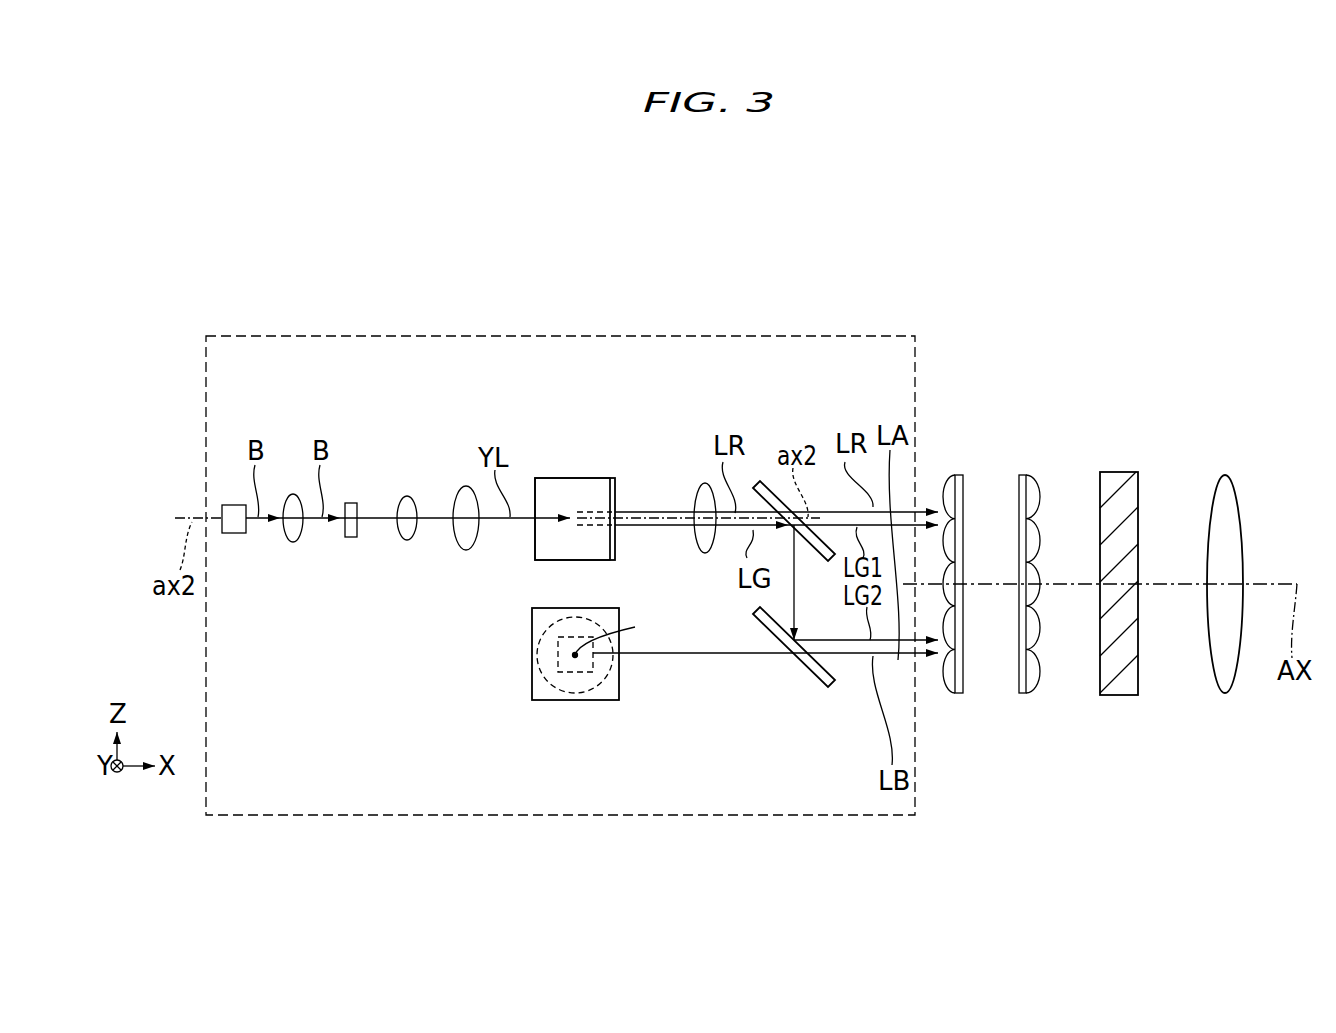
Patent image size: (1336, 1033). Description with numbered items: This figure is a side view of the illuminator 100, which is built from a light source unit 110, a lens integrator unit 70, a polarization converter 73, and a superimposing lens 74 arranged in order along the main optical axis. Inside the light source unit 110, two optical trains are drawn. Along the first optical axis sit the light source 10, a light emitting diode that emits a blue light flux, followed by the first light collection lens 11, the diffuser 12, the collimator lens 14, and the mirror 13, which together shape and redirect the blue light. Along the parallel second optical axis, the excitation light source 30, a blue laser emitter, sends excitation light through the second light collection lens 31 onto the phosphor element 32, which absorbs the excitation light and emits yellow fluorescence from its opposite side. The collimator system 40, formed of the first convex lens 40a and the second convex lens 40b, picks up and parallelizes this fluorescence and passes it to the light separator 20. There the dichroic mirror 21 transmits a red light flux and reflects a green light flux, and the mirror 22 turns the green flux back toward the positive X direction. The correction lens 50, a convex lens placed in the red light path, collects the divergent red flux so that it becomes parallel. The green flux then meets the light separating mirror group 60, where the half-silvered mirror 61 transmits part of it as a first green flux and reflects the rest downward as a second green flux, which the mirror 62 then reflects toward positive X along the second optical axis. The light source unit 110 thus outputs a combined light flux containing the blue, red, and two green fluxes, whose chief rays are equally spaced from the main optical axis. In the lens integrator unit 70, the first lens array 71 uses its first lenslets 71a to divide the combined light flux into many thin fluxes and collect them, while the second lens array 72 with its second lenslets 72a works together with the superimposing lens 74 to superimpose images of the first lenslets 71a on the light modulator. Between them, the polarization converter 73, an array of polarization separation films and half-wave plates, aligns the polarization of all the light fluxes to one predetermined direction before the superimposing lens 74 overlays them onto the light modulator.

The illuminator 100 is at (1037, 266).
The light source unit 110 is at (390, 336).
The light source 10 is at (556, 657).
The first light collection lens 11 is at (553, 660).
The diffuser 12 is at (607, 690).
The mirror 13 is at (612, 680).
The collimator lens 14 is at (575, 654).
The light separator 20 is at (551, 474).
The dichroic mirror 21 is at (568, 490).
The mirror 22 is at (598, 487).
The excitation light source 30 is at (235, 528).
The second light collection lens 31 is at (292, 528).
The phosphor element 32 is at (349, 528).
The collimator system 40 is at (492, 612).
The first convex lens 40a is at (410, 530).
The second convex lens 40b is at (466, 530).
The correction lens 50 is at (702, 495).
The light separating mirror group 60 is at (878, 742).
The half-silvered mirror 61 is at (822, 560).
The mirror 62 is at (822, 678).
The lens integrator unit 70 is at (1033, 412).
The first lens array 71 is at (957, 480).
The first lenslet 71a is at (945, 672).
The second lens array 72 is at (1022, 480).
The second lenslet 72a is at (1035, 672).
The polarization converter 73 is at (1115, 478).
The superimposing lens 74 is at (1222, 478).